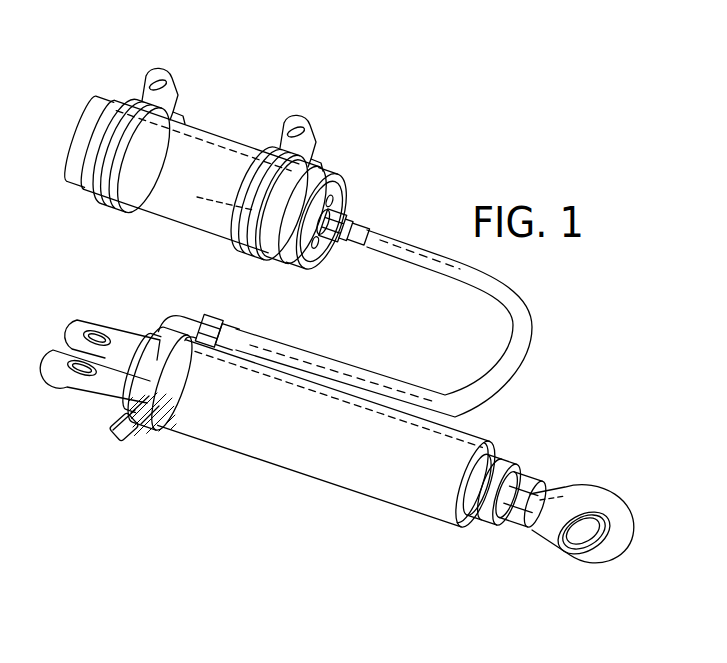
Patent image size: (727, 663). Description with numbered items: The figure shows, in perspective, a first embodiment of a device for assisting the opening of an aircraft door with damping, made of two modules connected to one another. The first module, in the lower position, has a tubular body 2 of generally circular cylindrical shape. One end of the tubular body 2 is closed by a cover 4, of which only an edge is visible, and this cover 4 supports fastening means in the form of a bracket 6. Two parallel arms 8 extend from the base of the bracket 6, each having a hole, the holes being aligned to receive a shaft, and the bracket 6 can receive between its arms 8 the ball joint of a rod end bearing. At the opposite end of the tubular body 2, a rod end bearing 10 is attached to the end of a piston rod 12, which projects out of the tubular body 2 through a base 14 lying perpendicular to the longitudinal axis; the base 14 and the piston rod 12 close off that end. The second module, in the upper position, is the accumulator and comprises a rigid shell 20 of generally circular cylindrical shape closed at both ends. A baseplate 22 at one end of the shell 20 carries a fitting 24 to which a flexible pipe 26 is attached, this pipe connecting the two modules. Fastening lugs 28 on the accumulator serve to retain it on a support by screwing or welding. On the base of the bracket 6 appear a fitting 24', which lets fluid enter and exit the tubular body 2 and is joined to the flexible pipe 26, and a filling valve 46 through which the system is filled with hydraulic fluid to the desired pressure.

The tubular body 2 is at (207, 410).
The cover 4 is at (167, 412).
The bracket 6 is at (157, 358).
The arms 8 is at (70, 350).
The rod end bearing 10 is at (597, 506).
The piston rod 12 is at (500, 470).
The base 14 is at (492, 455).
The rigid shell 20 is at (211, 145).
The baseplate 22 is at (345, 197).
The fitting 24 is at (344, 258).
The fitting 24' is at (196, 316).
The flexible pipe 26 is at (523, 308).
The fastening lugs 28 is at (155, 72).
The filling valve 46 is at (117, 418).